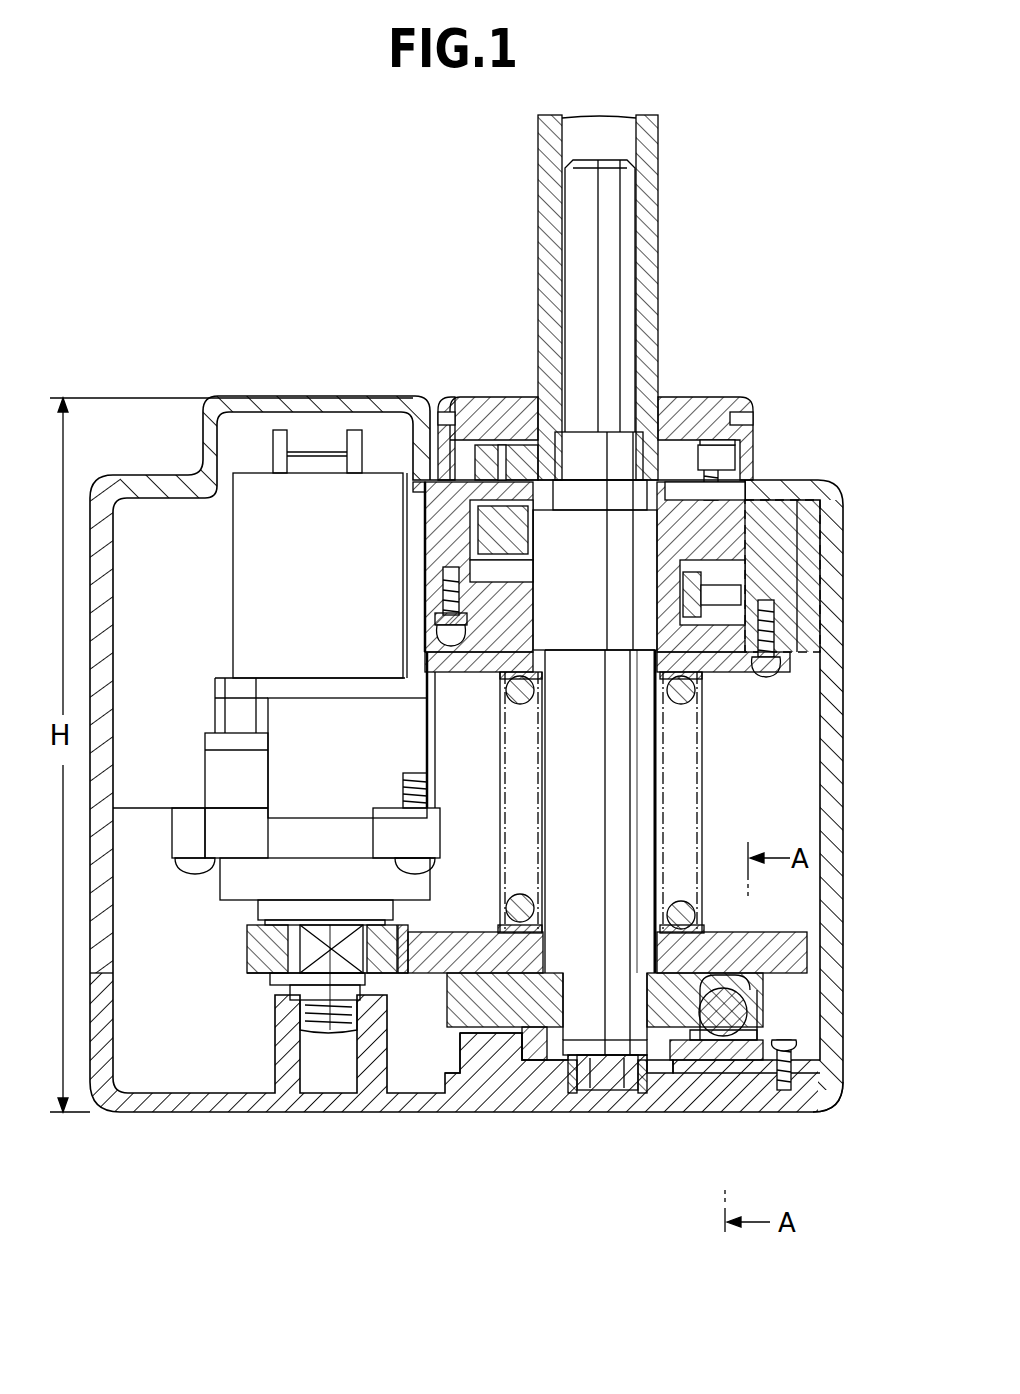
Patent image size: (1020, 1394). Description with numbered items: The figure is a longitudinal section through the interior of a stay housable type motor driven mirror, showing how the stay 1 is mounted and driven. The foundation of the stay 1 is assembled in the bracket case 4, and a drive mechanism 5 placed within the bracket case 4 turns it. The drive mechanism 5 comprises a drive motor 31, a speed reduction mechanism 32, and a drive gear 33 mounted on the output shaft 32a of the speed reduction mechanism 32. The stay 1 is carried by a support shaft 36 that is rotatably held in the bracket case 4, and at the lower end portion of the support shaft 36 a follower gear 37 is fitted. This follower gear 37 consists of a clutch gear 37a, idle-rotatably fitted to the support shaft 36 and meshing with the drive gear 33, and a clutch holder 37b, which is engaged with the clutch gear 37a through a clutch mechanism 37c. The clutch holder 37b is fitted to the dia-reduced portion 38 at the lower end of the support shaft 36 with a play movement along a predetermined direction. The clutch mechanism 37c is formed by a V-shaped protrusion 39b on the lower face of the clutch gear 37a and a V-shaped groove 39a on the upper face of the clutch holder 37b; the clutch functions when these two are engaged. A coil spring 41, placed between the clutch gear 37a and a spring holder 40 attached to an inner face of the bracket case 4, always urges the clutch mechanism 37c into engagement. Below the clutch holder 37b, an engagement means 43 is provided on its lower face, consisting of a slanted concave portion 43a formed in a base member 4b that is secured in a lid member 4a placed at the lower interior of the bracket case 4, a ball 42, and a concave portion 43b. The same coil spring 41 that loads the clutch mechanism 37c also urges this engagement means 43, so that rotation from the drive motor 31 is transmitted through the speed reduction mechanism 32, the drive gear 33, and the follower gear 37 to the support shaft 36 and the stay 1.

The stay 1 is at (658, 258).
The bracket case 4 is at (489, 775).
The lid member 4a is at (838, 1028).
The base member 4b is at (497, 1058).
The drive mechanism 5 is at (206, 692).
The drive motor 31 is at (255, 525).
The speed reduction mechanism 32 is at (290, 772).
The output shaft 32a is at (328, 965).
The drive gear 33 is at (265, 975).
The support shaft 36 is at (633, 765).
The follower gear 37 is at (701, 1089).
The clutch gear 37a is at (705, 980).
The clutch holder 37b is at (658, 990).
The clutch mechanism 37c is at (820, 1094).
The dia-reduced portion 38 is at (598, 1070).
The V-shaped groove 39a is at (447, 1017).
The V-shaped protrusion 39b is at (447, 933).
The spring holder 40 is at (738, 655).
The coil spring 41 is at (690, 790).
The ball 42 is at (728, 945).
The engagement means 43 is at (760, 990).
The slanted concave portion 43a is at (700, 1025).
The concave portion 43b is at (706, 932).